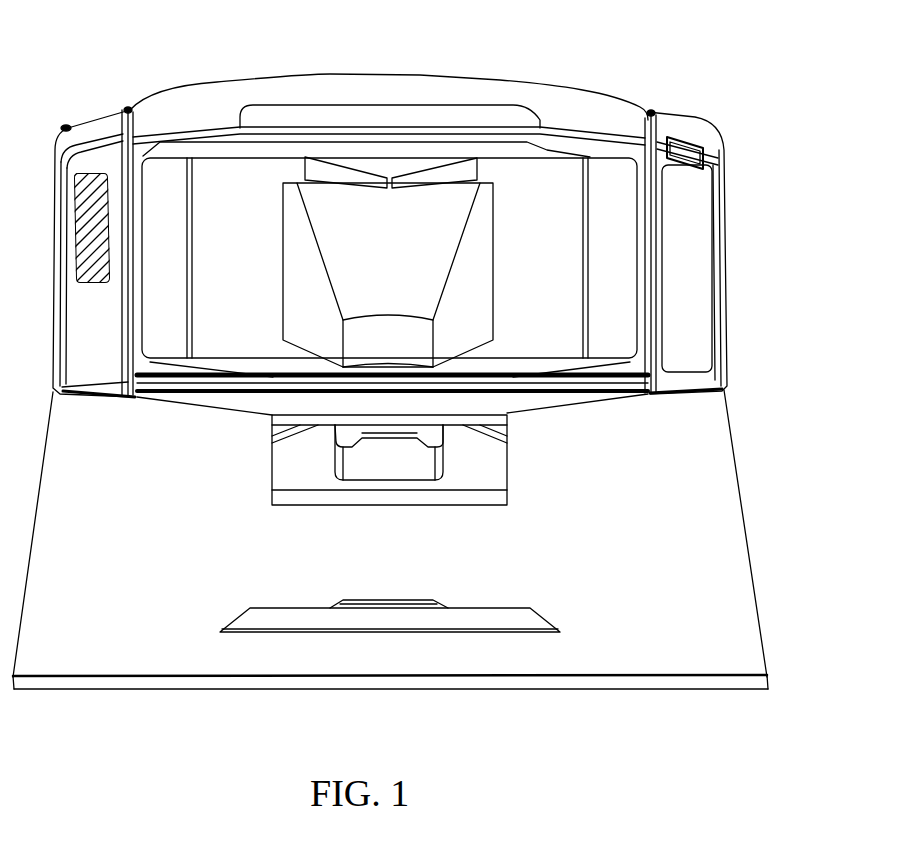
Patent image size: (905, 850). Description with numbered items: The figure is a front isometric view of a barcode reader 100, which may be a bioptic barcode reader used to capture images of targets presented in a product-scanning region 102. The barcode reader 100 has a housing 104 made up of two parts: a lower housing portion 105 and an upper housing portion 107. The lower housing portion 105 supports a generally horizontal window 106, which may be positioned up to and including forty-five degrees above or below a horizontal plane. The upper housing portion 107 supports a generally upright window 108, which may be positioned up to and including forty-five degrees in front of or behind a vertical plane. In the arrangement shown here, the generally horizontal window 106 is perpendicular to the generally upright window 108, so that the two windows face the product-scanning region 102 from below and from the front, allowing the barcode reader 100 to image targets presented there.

The barcode reader 100 is at (703, 72).
The product-scanning region 102 is at (397, 429).
The housing 104 is at (721, 425).
The lower housing portion 105 is at (712, 560).
The generally horizontal window 106 is at (417, 462).
The upper housing portion 107 is at (613, 223).
The generally upright window 108 is at (479, 200).